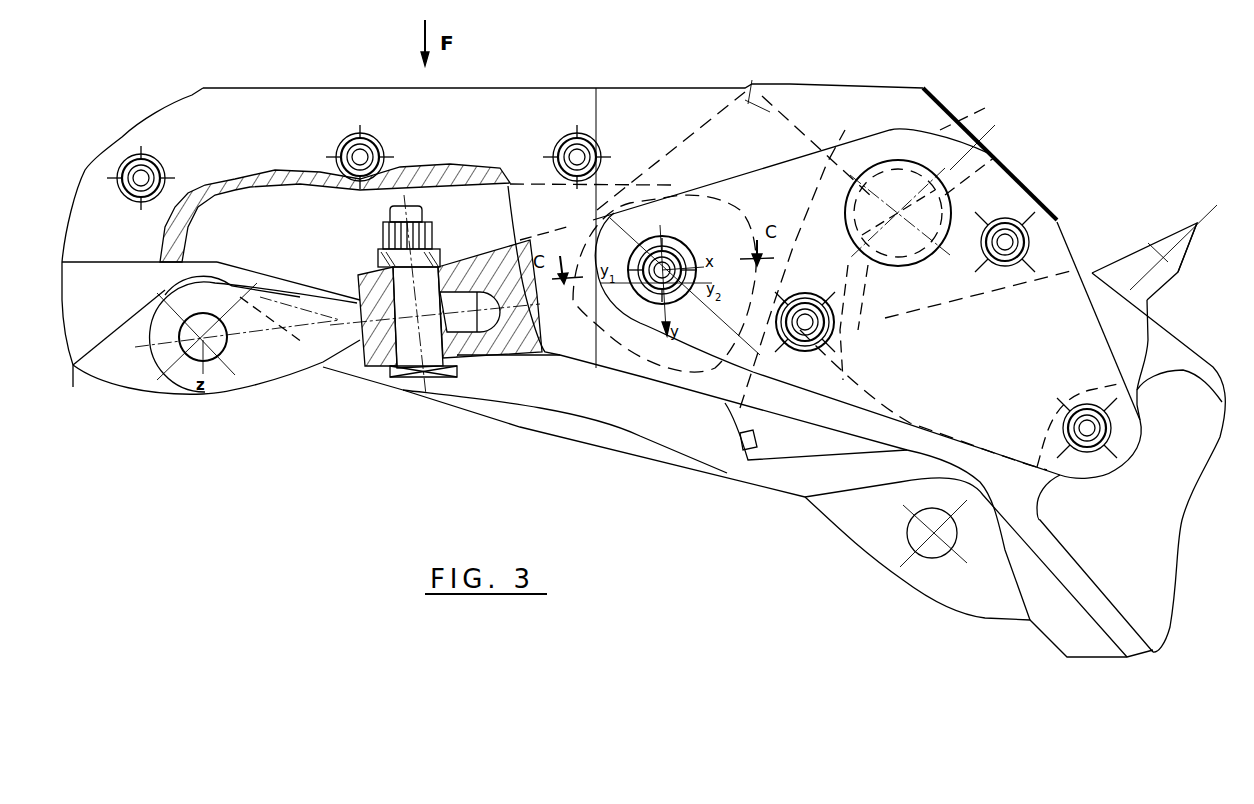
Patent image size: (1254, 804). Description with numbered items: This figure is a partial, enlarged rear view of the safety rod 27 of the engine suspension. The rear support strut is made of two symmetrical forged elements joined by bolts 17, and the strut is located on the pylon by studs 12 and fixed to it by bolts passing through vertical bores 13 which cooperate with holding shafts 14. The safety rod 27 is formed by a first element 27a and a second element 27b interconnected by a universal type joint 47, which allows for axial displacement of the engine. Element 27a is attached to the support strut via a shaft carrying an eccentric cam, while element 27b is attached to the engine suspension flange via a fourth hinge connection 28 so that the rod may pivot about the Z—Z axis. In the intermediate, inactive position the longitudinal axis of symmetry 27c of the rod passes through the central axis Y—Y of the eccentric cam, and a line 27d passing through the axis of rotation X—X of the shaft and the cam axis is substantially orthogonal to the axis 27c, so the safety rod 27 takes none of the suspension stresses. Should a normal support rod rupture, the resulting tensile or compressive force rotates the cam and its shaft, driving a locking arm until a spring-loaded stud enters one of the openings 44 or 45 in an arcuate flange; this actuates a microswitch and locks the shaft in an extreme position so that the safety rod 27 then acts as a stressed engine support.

The studs 12 is at (1158, 250).
The vertical bores 13 is at (970, 167).
The holding shafts 14 is at (913, 243).
The bolts 17 is at (149, 154).
The safety rod 27 is at (494, 250).
The element of the safety rod 27a is at (520, 340).
The second element of the safety rod 27b is at (287, 350).
The longitudinal axis of symmetry 27c is at (252, 338).
The line through the shaft axis and cam axis 27d is at (670, 250).
The fourth hinge connection 28 is at (135, 365).
The opening 44 is at (765, 432).
The opening 45 is at (767, 103).
The universal type joint 47 is at (407, 377).